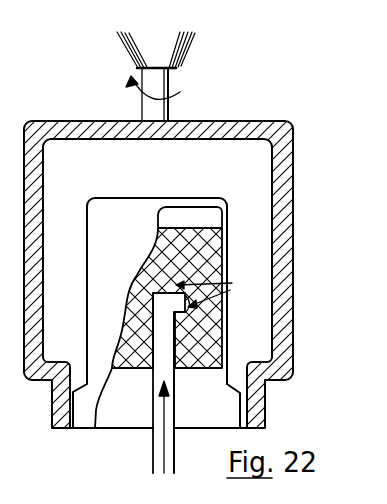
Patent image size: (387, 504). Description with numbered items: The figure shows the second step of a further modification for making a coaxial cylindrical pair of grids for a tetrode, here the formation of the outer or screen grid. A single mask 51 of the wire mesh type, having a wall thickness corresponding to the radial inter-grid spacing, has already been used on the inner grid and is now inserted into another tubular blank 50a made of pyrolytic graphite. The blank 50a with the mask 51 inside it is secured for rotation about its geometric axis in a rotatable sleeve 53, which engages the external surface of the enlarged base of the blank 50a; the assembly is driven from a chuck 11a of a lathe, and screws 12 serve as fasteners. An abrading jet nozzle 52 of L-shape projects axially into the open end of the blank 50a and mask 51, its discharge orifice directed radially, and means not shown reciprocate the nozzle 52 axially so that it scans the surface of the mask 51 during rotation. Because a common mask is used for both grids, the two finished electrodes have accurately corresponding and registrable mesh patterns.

The chuck 11a is at (186, 50).
The rotatable sleeve 53 is at (292, 233).
The tubular blank 50a is at (221, 204).
The mask 51 is at (222, 242).
The screws 12 is at (241, 407).
The abrading jet nozzle 52 is at (153, 444).